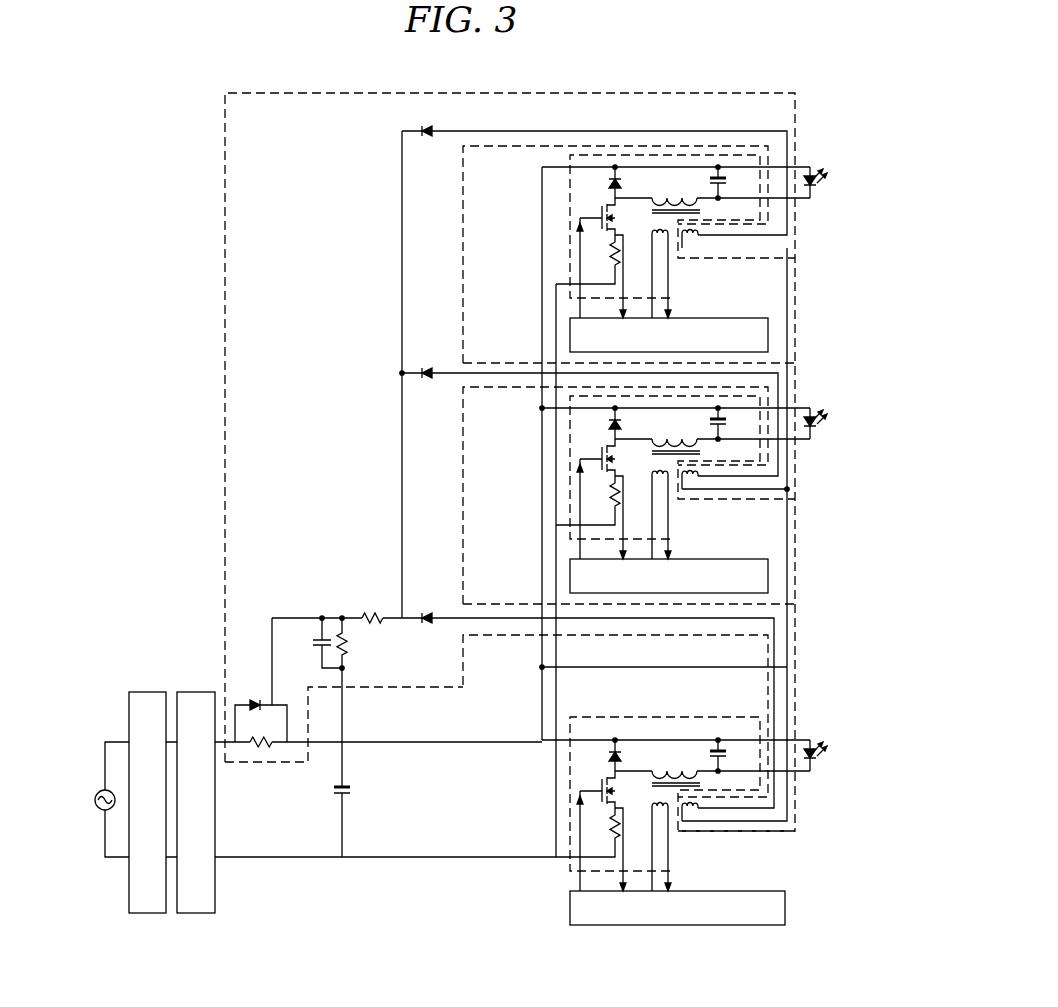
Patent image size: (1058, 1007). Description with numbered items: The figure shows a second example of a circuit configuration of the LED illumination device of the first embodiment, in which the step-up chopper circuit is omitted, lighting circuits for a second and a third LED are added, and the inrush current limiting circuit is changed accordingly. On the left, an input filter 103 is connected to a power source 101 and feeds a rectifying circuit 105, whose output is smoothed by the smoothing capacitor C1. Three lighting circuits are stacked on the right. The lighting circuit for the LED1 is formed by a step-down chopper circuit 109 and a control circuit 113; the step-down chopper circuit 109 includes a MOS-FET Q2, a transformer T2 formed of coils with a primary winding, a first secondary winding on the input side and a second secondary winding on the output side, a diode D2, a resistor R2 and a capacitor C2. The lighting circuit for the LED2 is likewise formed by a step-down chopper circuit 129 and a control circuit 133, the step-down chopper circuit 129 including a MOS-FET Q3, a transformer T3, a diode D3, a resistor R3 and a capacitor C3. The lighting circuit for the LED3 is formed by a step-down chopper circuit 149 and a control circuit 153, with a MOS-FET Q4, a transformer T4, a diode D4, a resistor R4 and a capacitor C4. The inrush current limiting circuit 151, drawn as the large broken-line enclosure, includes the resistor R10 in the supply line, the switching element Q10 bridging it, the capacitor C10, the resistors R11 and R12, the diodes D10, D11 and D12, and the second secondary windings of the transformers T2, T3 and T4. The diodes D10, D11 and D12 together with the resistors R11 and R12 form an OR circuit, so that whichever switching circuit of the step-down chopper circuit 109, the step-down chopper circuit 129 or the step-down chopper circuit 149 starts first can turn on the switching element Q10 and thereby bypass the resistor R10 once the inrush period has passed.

The power source 101 is at (105, 790).
The input filter 103 is at (147, 692).
The rectifying circuit 105 is at (195, 692).
The step-down chopper circuit 109 is at (682, 775).
The control circuit 113 is at (651, 908).
The step-down chopper circuit 129 is at (638, 467).
The control circuit 133 is at (669, 558).
The step-down chopper circuit 149 is at (570, 212).
The inrush current limiting circuit 151 is at (224, 621).
The control circuit 153 is at (728, 318).
The diode D10 is at (578, 702).
The diode D11 is at (589, 411).
The diode D12 is at (594, 170).
The switching element Q10 is at (259, 680).
The resistor R10 is at (262, 731).
The resistor R11 is at (362, 643).
The resistor R12 is at (374, 609).
The capacitor C10 is at (317, 642).
The smoothing capacitor C1 is at (358, 762).
The diode D2 is at (629, 754).
The diode D3 is at (629, 422).
The diode D4 is at (629, 181).
The MOS-FET Q2 is at (613, 789).
The MOS-FET Q3 is at (613, 457).
The MOS-FET Q4 is at (613, 216).
The resistor R2 is at (588, 832).
The resistor R3 is at (588, 500).
The resistor R4 is at (588, 259).
The transformer T2 is at (688, 818).
The transformer T3 is at (688, 486).
The transformer T4 is at (688, 245).
The capacitor C2 is at (732, 755).
The capacitor C3 is at (732, 423).
The capacitor C4 is at (732, 182).
The LED LED1 is at (815, 781).
The LED LED2 is at (815, 449).
The LED LED3 is at (815, 208).